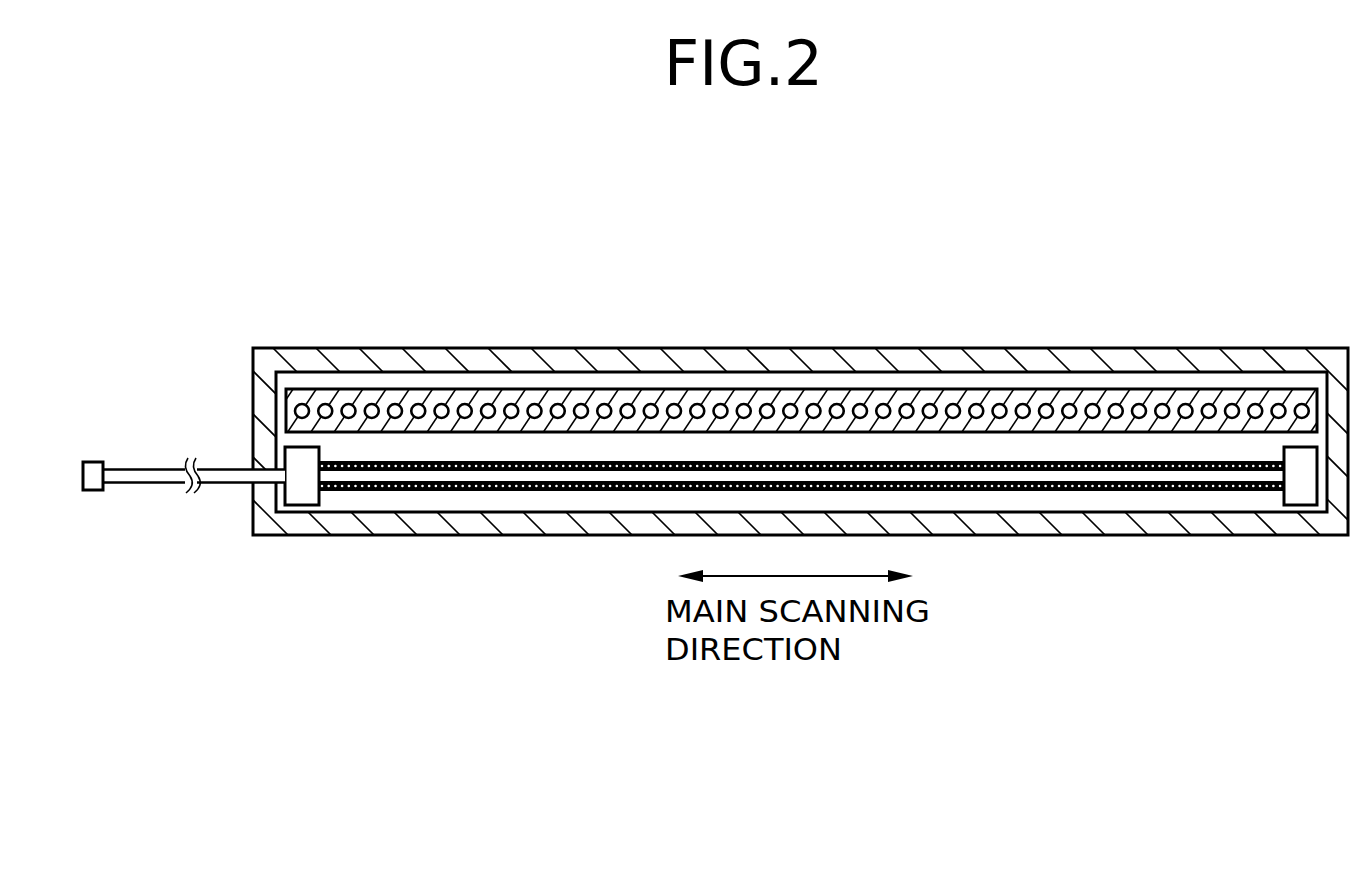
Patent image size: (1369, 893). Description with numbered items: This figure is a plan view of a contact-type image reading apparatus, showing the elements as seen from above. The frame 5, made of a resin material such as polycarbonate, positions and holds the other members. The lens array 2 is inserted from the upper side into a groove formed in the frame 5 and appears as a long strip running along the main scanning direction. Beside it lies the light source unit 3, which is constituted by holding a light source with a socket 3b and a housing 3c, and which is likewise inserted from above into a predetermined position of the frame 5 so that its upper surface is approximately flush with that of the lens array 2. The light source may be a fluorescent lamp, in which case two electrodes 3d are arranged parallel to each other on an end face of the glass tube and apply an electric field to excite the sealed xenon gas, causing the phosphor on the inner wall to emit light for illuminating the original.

The lens array 2 is at (908, 404).
The light source unit 3 is at (700, 508).
The socket 3b is at (463, 464).
The housing 3c is at (287, 455).
The electrodes 3d is at (157, 480).
The frame 5 is at (607, 347).